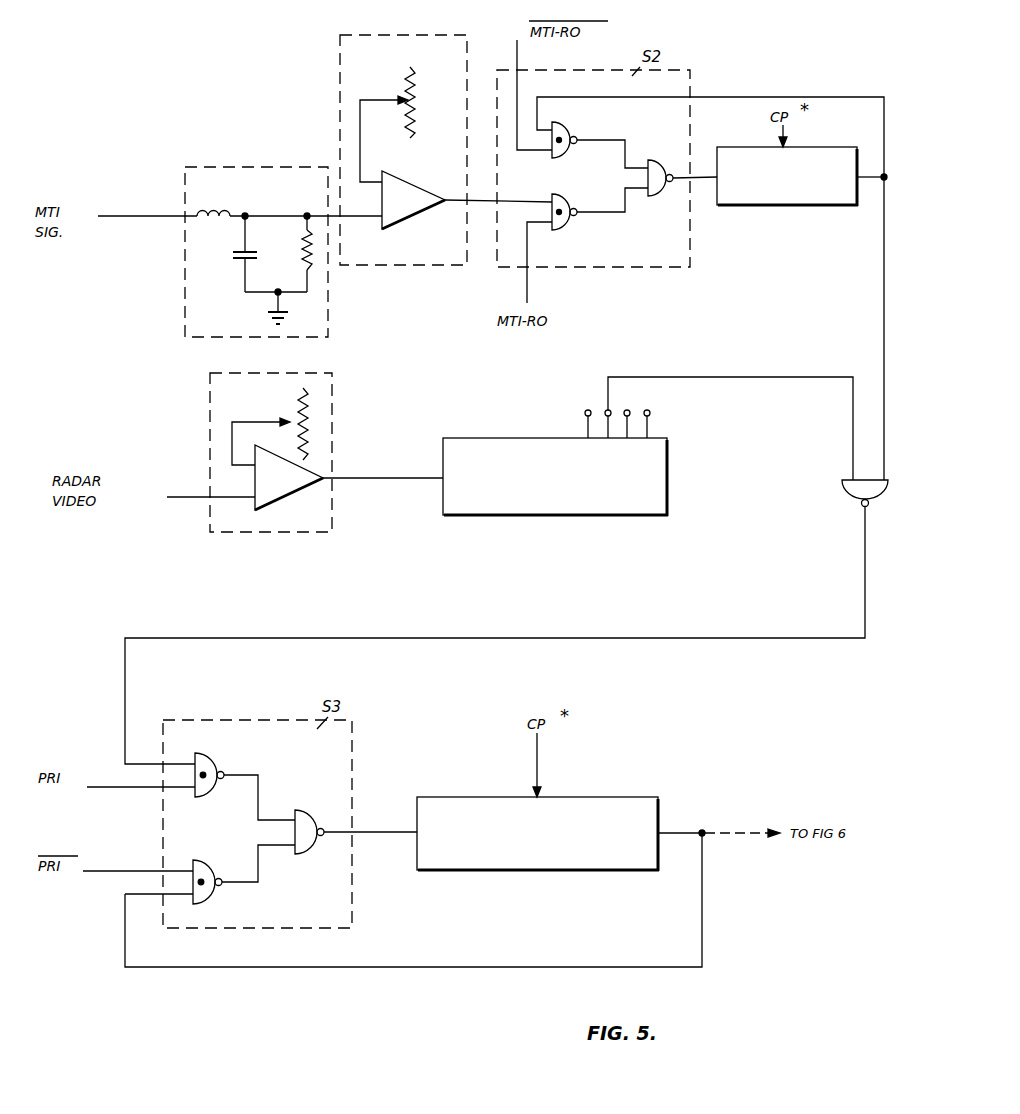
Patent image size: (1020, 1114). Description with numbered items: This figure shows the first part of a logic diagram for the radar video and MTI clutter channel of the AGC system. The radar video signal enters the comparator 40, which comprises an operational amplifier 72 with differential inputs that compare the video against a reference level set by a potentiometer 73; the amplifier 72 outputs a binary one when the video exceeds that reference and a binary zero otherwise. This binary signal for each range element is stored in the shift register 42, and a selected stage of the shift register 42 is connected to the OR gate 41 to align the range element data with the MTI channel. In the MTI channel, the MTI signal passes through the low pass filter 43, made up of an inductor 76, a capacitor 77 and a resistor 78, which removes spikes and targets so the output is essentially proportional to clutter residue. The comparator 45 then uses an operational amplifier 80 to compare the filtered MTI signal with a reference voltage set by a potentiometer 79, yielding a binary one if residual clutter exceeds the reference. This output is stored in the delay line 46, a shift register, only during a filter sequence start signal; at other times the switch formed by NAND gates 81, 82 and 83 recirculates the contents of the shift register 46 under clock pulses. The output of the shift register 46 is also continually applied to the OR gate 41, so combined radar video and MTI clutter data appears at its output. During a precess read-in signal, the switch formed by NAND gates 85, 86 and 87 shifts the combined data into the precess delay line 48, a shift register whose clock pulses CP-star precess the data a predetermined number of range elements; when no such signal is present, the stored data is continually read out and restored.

The comparator 40 is at (273, 523).
The OR gate 41 is at (847, 493).
The shift register 42 is at (473, 503).
The low pass filter 43 is at (267, 167).
The comparator 45 is at (385, 255).
The delay line 46 is at (780, 196).
The precess delay line 48 is at (630, 847).
The operational amplifier 72 is at (293, 485).
The potentiometer 73 is at (308, 417).
The inductor 76 is at (216, 211).
The capacitor 77 is at (233, 265).
The resistor 78 is at (302, 240).
The potentiometer 79 is at (416, 90).
The operational amplifier 80 is at (417, 203).
The NAND gate 81 is at (570, 126).
The NAND gate 82 is at (572, 198).
The NAND gate 83 is at (660, 158).
The NAND gate 85 is at (215, 760).
The NAND gate 86 is at (210, 863).
The NAND gate 87 is at (306, 856).